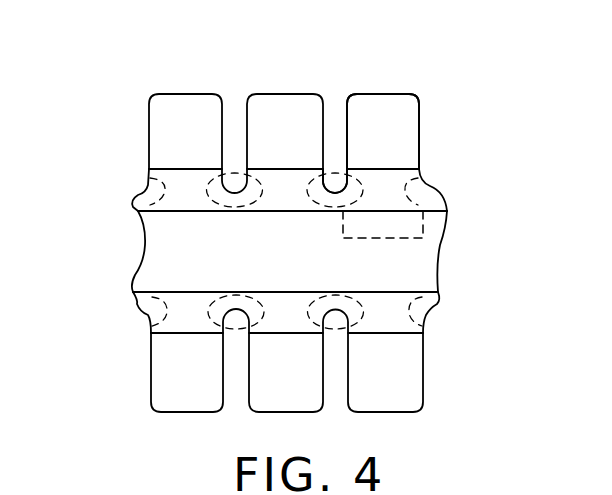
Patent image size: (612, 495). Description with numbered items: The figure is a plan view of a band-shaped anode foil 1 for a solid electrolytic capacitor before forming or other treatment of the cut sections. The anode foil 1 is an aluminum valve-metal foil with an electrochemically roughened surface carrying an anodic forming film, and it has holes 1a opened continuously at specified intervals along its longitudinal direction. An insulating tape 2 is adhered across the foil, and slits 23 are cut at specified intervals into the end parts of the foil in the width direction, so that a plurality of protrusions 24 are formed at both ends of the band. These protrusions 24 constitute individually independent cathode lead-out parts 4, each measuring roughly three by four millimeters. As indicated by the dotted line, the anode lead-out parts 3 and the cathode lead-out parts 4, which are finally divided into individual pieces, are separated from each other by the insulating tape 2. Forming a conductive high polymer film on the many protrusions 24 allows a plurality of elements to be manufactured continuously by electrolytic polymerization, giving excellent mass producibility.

The anode foil 1 is at (426, 281).
The holes 1a is at (355, 313).
The insulating tape 2 is at (390, 200).
The anode lead-out parts 3 is at (410, 225).
The cathode lead-out parts 4 is at (413, 124).
The slits 23 is at (333, 125).
The protrusions 24 is at (383, 115).